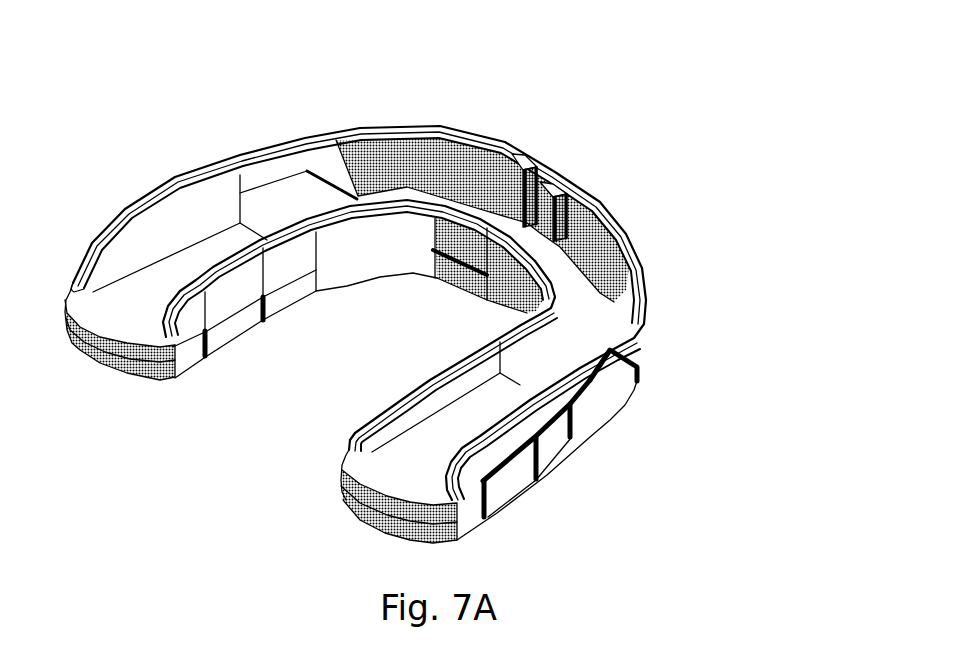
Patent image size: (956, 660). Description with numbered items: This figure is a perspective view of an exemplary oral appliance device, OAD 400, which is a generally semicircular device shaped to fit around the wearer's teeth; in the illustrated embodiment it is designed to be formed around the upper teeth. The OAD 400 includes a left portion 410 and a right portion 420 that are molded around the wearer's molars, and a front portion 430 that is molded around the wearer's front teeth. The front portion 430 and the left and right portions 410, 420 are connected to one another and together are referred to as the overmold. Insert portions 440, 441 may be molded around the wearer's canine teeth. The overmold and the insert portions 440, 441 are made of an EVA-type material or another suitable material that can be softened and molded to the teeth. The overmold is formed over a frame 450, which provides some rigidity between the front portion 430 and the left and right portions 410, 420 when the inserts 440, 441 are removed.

The OAD 400 is at (436, 332).
The left portion 410 is at (183, 142).
The right portion 420 is at (297, 533).
The front portion 430 is at (562, 138).
The insert portion 440 is at (352, 278).
The insert portion 441 is at (607, 408).
The frame 450 is at (638, 362).